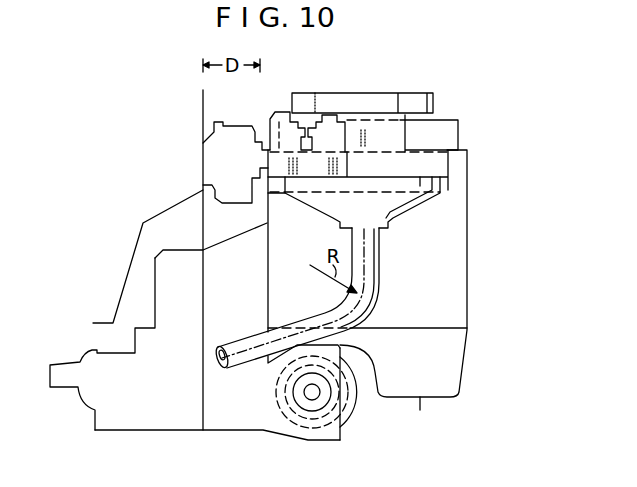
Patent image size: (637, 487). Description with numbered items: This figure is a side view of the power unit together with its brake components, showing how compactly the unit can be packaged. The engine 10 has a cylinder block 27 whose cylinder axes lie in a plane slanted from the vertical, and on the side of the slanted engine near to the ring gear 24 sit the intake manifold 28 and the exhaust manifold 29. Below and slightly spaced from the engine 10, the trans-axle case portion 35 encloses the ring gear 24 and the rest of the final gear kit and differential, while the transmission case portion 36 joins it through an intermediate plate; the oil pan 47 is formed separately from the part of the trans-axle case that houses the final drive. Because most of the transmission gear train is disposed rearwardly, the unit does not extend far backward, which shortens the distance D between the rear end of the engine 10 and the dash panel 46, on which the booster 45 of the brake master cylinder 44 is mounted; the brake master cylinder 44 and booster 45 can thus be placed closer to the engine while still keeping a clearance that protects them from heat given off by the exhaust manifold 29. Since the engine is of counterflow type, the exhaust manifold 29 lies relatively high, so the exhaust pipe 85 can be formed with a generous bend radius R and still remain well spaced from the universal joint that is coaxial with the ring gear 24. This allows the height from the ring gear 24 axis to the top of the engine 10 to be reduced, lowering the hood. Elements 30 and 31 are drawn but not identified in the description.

The engine 10 is at (452, 252).
The ring gear 24 is at (340, 428).
The cylinder block 27 is at (460, 269).
The intake manifold 28 is at (444, 167).
The exhaust manifold 29 is at (417, 198).
The block 30 is at (405, 141).
The top block 31 is at (436, 104).
The trans-axle case portion 35 is at (237, 425).
The transmission case portion 36 is at (150, 425).
The brake master cylinder 44 is at (278, 118).
The booster 45 is at (233, 128).
The dash panel 46 is at (203, 157).
The oil pan 47 is at (420, 404).
The exhaust pipe 85 is at (381, 283).